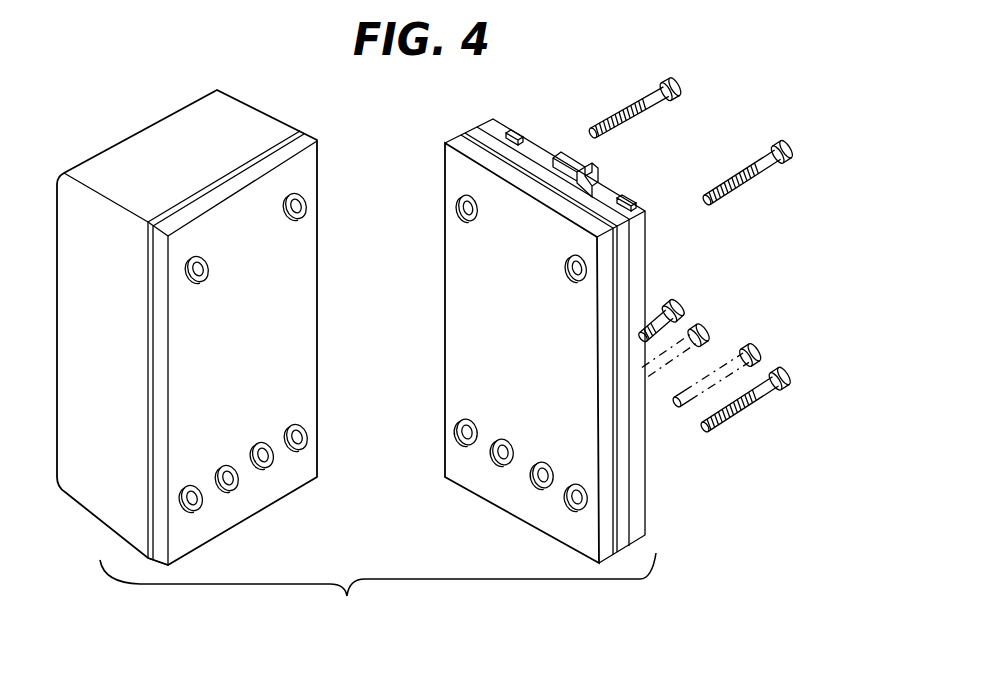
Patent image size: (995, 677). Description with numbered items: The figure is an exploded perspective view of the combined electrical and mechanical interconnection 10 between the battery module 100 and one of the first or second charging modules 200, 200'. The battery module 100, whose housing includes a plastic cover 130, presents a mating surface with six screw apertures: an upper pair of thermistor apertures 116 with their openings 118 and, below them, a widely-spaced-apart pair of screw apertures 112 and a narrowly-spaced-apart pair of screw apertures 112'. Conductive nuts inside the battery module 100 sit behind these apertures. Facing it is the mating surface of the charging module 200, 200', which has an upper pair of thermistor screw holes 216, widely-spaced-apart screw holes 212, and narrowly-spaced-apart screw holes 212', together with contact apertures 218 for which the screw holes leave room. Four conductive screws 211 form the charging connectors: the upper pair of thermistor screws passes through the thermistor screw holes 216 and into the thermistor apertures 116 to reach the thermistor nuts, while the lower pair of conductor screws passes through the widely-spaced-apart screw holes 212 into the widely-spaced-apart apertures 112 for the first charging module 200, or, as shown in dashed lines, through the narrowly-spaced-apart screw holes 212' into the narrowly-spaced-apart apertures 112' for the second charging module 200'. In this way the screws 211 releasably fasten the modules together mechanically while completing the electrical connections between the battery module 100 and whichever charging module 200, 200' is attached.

The battery pack assembly 10 is at (378, 594).
The battery module 100 is at (273, 105).
The plastic cover 130 is at (165, 142).
The thermistor apertures 116 is at (293, 216).
The terminal opening 118 is at (283, 212).
The widely-spaced-apart screw apertures 112 is at (241, 446).
The narrowly-spaced-apart screw apertures 112' is at (243, 419).
The first charging module 200 is at (545, 288).
The second charging module 200' is at (554, 284).
The conductive screws 211 is at (770, 150).
The widely-spaced-apart screw holes 212 is at (482, 418).
The narrowly-spaced-apart screw holes 212' is at (467, 501).
The thermistor screw holes 216 is at (573, 256).
The contact apertures 218 is at (569, 270).